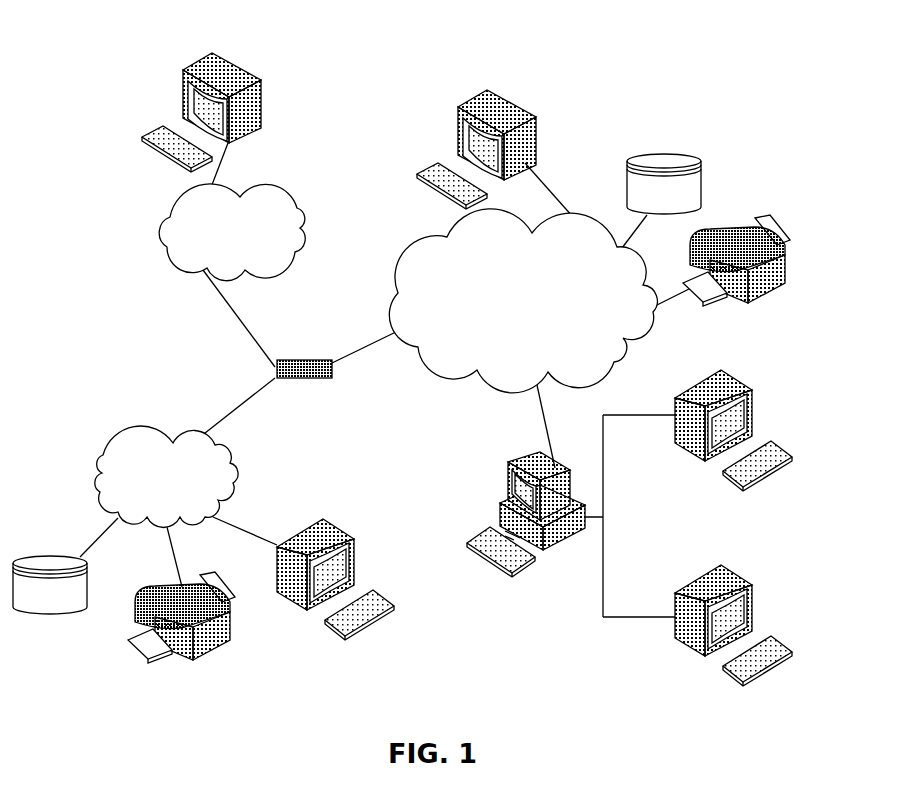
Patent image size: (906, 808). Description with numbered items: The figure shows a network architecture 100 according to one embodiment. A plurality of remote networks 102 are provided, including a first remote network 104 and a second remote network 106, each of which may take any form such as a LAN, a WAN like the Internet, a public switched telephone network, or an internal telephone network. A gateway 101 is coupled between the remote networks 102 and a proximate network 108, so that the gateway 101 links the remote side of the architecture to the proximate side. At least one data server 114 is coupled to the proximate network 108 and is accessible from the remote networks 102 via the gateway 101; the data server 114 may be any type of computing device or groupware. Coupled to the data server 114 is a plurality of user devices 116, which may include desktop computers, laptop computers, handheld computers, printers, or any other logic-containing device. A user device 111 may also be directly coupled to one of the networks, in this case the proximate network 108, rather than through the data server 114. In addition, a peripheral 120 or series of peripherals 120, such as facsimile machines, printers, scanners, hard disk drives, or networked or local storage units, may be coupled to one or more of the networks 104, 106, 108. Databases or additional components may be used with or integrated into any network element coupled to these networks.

The network architecture 100 is at (127, 41).
The gateway 101 is at (290, 357).
The remote networks 102 is at (156, 280).
The first remote network 104 is at (100, 458).
The second remote network 106 is at (299, 207).
The proximate network 108 is at (616, 362).
The user device 111 is at (537, 118).
The data server 114 is at (510, 475).
The user devices 116 is at (258, 88).
The peripheral 120 is at (700, 164).